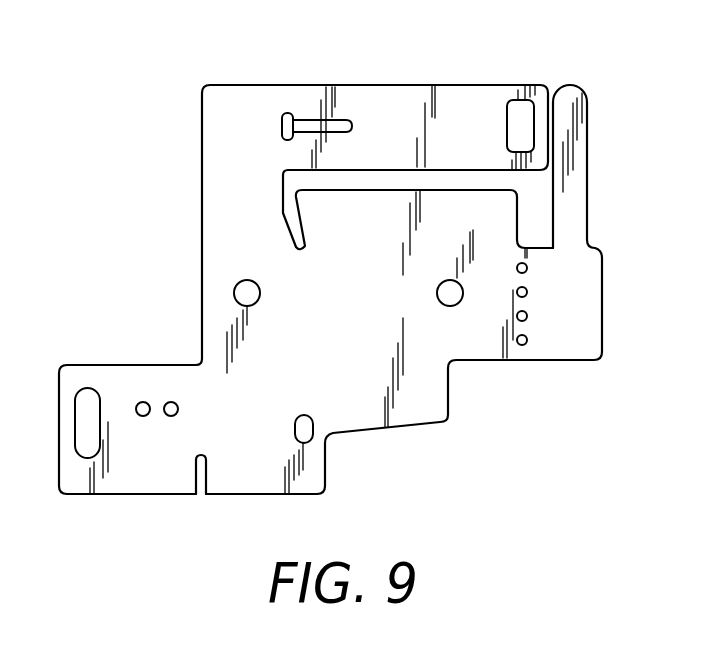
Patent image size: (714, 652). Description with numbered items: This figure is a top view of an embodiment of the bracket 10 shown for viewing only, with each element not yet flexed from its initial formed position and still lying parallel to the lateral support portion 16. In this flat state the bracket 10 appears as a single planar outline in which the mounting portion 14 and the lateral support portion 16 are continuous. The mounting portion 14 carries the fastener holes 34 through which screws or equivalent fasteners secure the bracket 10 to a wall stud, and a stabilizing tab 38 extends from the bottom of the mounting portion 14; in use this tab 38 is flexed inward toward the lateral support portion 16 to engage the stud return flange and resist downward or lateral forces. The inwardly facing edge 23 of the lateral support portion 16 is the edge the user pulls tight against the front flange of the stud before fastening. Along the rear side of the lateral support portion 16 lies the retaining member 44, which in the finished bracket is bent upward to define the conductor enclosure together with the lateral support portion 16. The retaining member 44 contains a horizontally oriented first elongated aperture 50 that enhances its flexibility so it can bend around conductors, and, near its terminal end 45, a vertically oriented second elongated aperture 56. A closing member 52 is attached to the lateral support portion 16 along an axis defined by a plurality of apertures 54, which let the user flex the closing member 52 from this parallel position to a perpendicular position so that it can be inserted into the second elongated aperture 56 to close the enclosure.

The bracket 10 is at (84, 156).
The mounting portion 14 is at (150, 468).
The lateral support portion 16 is at (380, 302).
The inwardly facing edge 23 is at (202, 263).
The fastener holes 34 is at (171, 402).
The stabilizing tab 38 is at (243, 465).
The retaining member 44 is at (397, 108).
The terminal end 45 is at (496, 98).
The first elongated aperture 50 is at (305, 118).
The closing member 52 is at (588, 165).
The apertures 54 is at (527, 340).
The second elongated aperture 56 is at (523, 113).